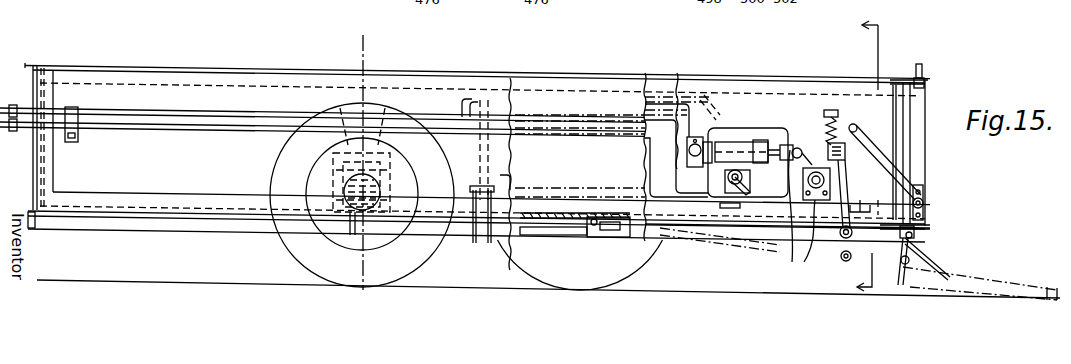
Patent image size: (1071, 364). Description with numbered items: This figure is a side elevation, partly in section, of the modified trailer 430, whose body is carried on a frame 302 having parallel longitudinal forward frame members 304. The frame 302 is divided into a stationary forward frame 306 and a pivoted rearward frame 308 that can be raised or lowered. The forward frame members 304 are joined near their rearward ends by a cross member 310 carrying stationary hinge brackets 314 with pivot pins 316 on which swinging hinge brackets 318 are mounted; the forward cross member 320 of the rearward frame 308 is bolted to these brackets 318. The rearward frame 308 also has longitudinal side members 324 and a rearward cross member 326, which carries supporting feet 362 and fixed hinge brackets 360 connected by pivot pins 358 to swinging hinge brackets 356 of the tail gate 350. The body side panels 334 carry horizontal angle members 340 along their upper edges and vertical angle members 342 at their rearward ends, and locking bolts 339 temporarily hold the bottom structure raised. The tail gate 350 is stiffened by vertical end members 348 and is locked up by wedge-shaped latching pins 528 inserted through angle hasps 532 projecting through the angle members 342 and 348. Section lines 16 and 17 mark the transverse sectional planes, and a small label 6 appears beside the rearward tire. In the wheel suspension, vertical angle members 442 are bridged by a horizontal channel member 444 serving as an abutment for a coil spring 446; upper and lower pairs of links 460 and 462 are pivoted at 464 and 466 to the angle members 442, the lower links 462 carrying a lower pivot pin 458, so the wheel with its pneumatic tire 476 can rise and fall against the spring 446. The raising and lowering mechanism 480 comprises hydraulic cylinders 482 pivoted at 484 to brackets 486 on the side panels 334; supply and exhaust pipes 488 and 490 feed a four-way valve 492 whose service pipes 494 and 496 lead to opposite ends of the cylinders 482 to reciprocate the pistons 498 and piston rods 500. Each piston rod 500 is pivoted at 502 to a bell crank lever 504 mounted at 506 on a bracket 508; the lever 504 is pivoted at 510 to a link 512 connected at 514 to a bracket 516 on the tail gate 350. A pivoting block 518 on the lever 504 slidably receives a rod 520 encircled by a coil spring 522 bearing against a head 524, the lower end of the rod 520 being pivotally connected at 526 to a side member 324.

The frame 302 is at (26, 207).
The longitudinal forward frame members 304 is at (82, 222).
The forward frame 306 is at (138, 232).
The rearward frame 308 is at (678, 242).
The cross member 310 is at (585, 230).
The stationary hinge brackets 314 is at (598, 237).
The pivot pins 316 is at (600, 238).
The swinging hinge brackets 318 is at (612, 238).
The forward cross member 320 is at (630, 238).
The longitudinal side members 324 is at (745, 258).
The rearward cross member 326 is at (883, 201).
The side panels 334 is at (180, 88).
The locking bolts 339 is at (859, 198).
The horizontal angle members 340 is at (252, 72).
The vertical angle members 342 is at (894, 90).
The end members 348 is at (910, 118).
The tail gate 350 is at (930, 148).
The swinging hinge brackets 356 is at (912, 228).
The pivot pins 358 is at (912, 236).
The fixed hinge brackets 360 is at (912, 242).
The supporting feet 362 is at (897, 282).
The modified trailer 430 is at (107, 64).
The vertical angle members 442 is at (326, 150).
The horizontal channel member 444 is at (338, 110).
The coil spring 446 is at (388, 110).
The lower pivot pin 458 is at (379, 192).
The upper pair of links 460 is at (333, 163).
The lower pair of links 462 is at (335, 200).
The pivot 464 is at (392, 176).
The pivot 466 is at (392, 188).
The pneumatic tires 476 is at (289, 258).
The raising and lowering mechanism 480 is at (762, 124).
The hydraulic cylinders 482 is at (744, 140).
The pivot 484 is at (687, 150).
The brackets 486 is at (666, 78).
The pressure fluid supply pipe 488 is at (226, 108).
The exhaust pipe 490 is at (218, 137).
The four-way valve 492 is at (730, 193).
The service pipe 494 is at (448, 116).
The service pipe 496 is at (486, 170).
The pistons 498 is at (722, 82).
The piston rods 500 is at (788, 145).
The pivotal connection 502 is at (799, 148).
The bell crank lever 504 is at (792, 262).
The pivot 506 is at (810, 235).
The bracket 508 is at (818, 200).
The pivot 510 is at (845, 140).
The link 512 is at (886, 135).
The pivotal connection 514 is at (924, 203).
The bracket 516 is at (923, 192).
The pivoting block 518 is at (851, 153).
The rod 520 is at (840, 180).
The coil spring 522 is at (850, 115).
The head 524 is at (831, 110).
The pivot 526 is at (861, 234).
The latching pins 528 is at (925, 57).
The angle hasps 532 is at (927, 84).
The wheel 6 is at (487, 290).
The section line 16 is at (372, 44).
The section line 17 is at (859, 158).